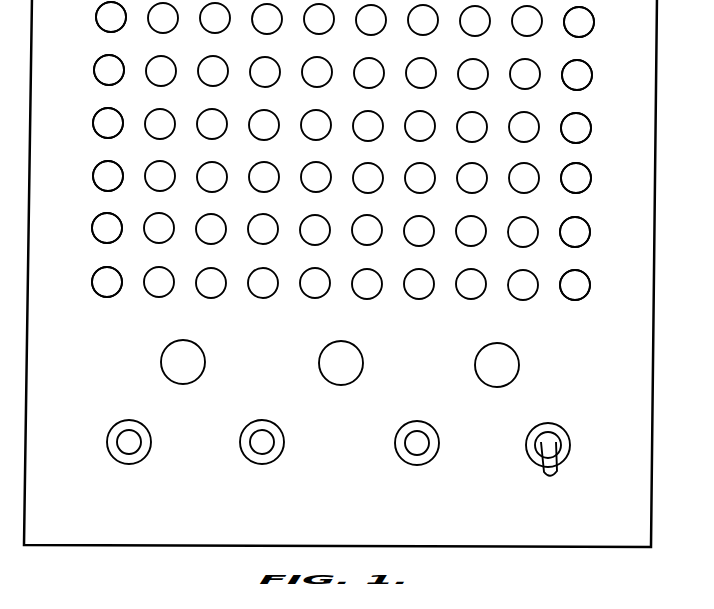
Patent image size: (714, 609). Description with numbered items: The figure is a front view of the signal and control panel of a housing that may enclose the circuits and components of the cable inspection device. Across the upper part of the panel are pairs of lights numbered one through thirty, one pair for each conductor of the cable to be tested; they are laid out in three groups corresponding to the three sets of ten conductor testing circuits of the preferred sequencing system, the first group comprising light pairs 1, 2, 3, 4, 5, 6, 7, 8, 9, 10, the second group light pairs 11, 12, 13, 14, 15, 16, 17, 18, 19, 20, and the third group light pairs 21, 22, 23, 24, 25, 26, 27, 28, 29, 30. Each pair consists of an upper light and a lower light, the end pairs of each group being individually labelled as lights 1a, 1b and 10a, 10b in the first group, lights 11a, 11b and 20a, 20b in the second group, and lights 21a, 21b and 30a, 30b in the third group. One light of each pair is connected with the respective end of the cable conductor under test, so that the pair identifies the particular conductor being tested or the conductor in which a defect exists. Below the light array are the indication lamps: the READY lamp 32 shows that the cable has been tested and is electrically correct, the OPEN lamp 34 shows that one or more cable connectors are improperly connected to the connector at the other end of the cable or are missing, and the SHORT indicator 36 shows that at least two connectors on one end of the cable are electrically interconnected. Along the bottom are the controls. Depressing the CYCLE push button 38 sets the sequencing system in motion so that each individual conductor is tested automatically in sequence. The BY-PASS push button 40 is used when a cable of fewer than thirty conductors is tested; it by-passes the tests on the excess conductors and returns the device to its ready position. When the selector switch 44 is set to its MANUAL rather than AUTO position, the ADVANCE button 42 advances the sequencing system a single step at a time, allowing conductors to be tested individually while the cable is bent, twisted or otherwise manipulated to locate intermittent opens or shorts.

The pair of lights 1 is at (110, 43).
The pair of lights 2 is at (162, 44).
The pair of lights 3 is at (214, 44).
The pair of lights 4 is at (266, 45).
The pair of lights 5 is at (318, 45).
The pair of lights 6 is at (370, 46).
The pair of lights 7 is at (422, 46).
The pair of lights 8 is at (474, 47).
The pair of lights 9 is at (526, 47).
The pair of lights 10 is at (578, 48).
The pair of lights 11 is at (108, 149).
The pair of lights 12 is at (160, 150).
The pair of lights 13 is at (212, 150).
The pair of lights 14 is at (264, 151).
The pair of lights 15 is at (316, 151).
The pair of lights 16 is at (368, 152).
The pair of lights 17 is at (420, 152).
The pair of lights 18 is at (472, 152).
The pair of lights 19 is at (524, 152).
The pair of lights 20 is at (576, 153).
The pair of lights 21 is at (107, 255).
The pair of lights 22 is at (159, 255).
The pair of lights 23 is at (211, 256).
The pair of lights 24 is at (263, 256).
The pair of lights 25 is at (315, 256).
The pair of lights 26 is at (367, 257).
The pair of lights 27 is at (419, 257).
The pair of lights 28 is at (471, 257).
The pair of lights 29 is at (523, 258).
The pair of lights 30 is at (575, 258).
The indicator lamp 1a is at (97, 16).
The indicator lamp 1b is at (95, 68).
The indicator lamp 11a is at (94, 122).
The indicator lamp 11b is at (94, 176).
The indicator lamp 21a is at (93, 229).
The indicator lamp 21b is at (93, 284).
The indicator lamp 10a is at (594, 22).
The indicator lamp 10b is at (592, 75).
The indicator lamp 20a is at (591, 127).
The indicator lamp 20b is at (591, 179).
The indicator lamp 30a is at (590, 233).
The indicator lamp 30b is at (590, 285).
The READY lamp 32 is at (363, 363).
The OPEN lamp 34 is at (205, 362).
The SHORT indicator 36 is at (519, 365).
The CYCLE push button 38 is at (150, 444).
The BY-PASS push button 40 is at (438, 445).
The ADVANCE button 42 is at (283, 444).
The selector switch 44 is at (569, 450).